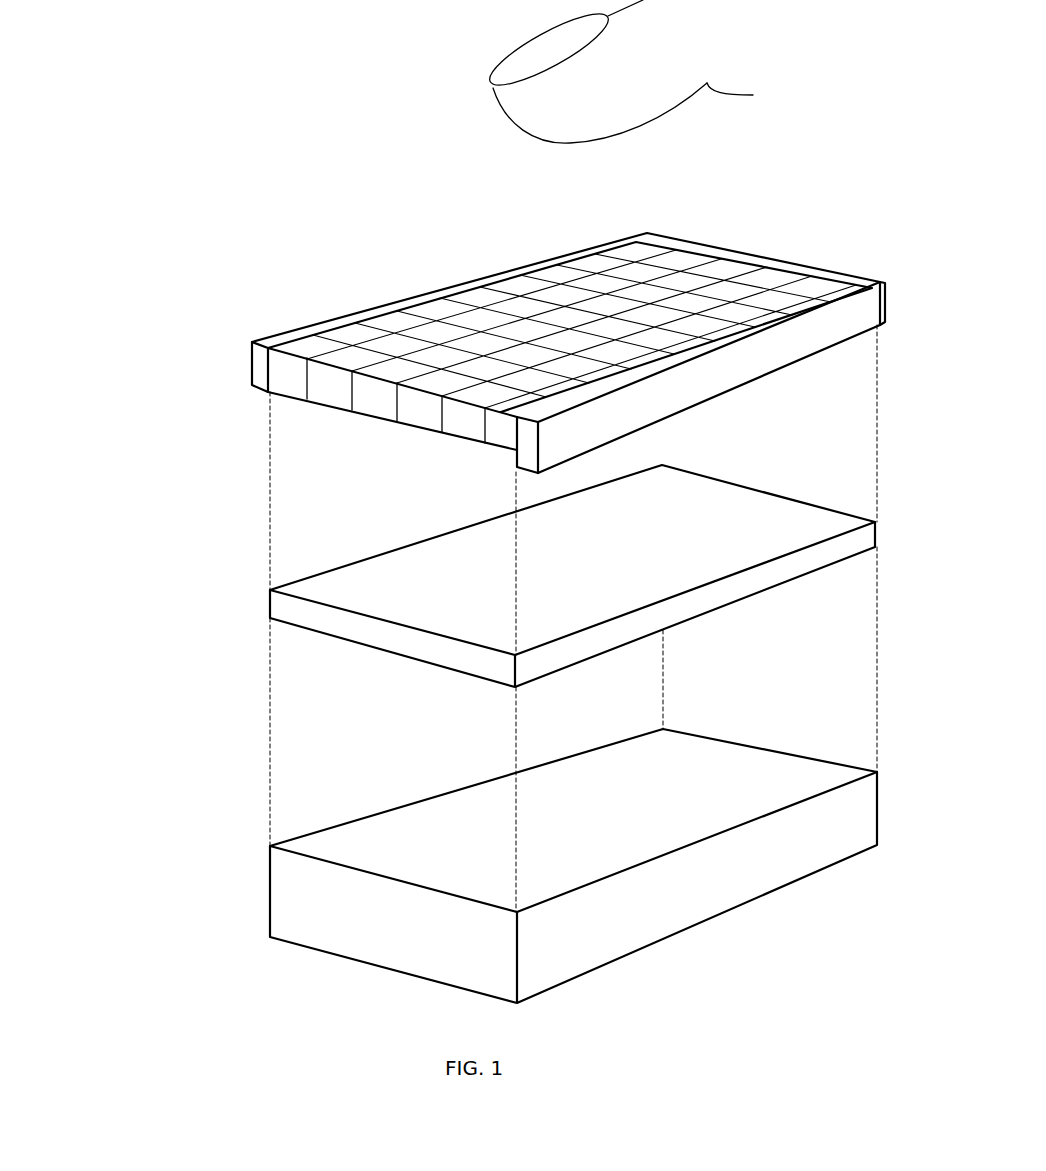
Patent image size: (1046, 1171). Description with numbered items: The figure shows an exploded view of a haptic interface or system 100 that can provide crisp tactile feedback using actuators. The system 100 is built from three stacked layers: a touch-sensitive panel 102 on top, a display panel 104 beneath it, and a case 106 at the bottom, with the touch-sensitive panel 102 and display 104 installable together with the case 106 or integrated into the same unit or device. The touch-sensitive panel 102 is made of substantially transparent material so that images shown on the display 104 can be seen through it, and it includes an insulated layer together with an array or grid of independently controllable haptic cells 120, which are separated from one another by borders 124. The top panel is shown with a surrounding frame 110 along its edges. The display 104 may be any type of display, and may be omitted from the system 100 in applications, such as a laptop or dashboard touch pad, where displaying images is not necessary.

The haptic interface or system 100 is at (190, 48).
The touch-sensitive panel 102 is at (282, 363).
The display panel 104 is at (338, 629).
The case 106 is at (302, 902).
The frame / rail 110 is at (245, 373).
The haptic cells 120 is at (385, 350).
The borders 124 is at (430, 320).